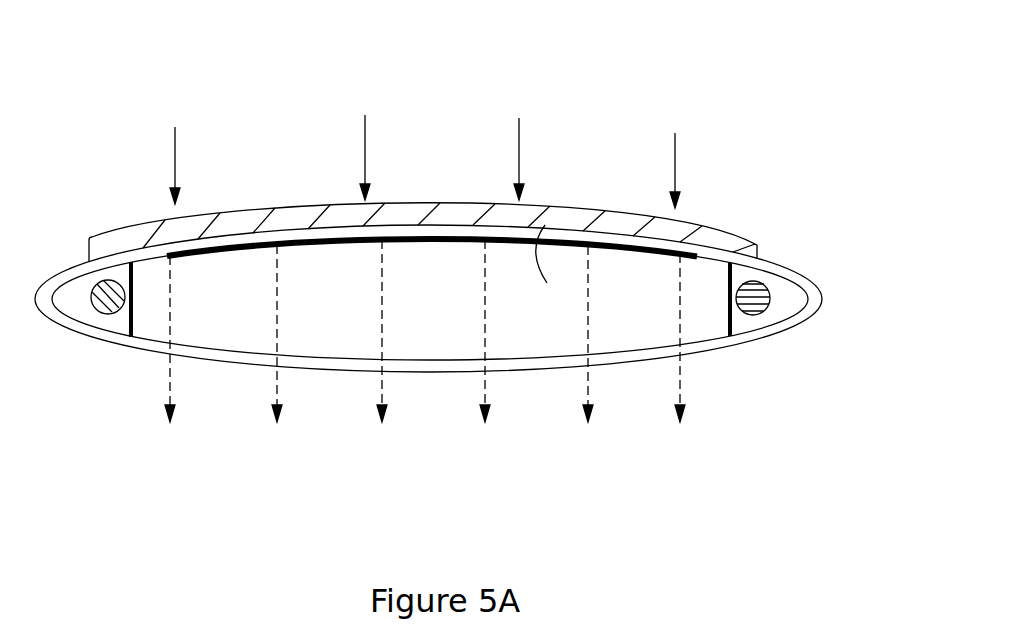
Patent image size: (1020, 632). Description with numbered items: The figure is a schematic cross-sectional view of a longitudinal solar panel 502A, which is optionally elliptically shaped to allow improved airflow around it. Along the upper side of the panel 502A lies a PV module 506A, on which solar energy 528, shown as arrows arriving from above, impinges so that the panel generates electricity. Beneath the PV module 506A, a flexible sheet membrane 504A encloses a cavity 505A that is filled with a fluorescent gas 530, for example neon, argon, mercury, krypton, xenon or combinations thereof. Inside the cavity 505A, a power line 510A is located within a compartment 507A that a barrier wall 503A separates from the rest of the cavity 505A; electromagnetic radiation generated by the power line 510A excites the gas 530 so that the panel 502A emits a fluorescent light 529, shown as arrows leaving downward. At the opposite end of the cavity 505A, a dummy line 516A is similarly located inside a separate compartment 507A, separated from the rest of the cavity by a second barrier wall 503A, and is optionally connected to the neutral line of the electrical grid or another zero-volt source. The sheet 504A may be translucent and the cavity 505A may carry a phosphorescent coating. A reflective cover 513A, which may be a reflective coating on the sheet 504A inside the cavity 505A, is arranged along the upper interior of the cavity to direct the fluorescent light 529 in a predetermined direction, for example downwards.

The solar panel 502A is at (545, 78).
The barrier wall 503A is at (727, 323).
The flexible sheet membrane 504A is at (398, 362).
The cavity 505A is at (545, 225).
The PV module 506A is at (226, 220).
The compartment 507A is at (798, 299).
The power line 510A is at (755, 282).
The reflective cover 513A is at (418, 237).
The dummy line 516A is at (112, 280).
The solar energy 528 is at (675, 175).
The fluorescent light 529 is at (590, 377).
The fluorescent gas 530 is at (247, 280).